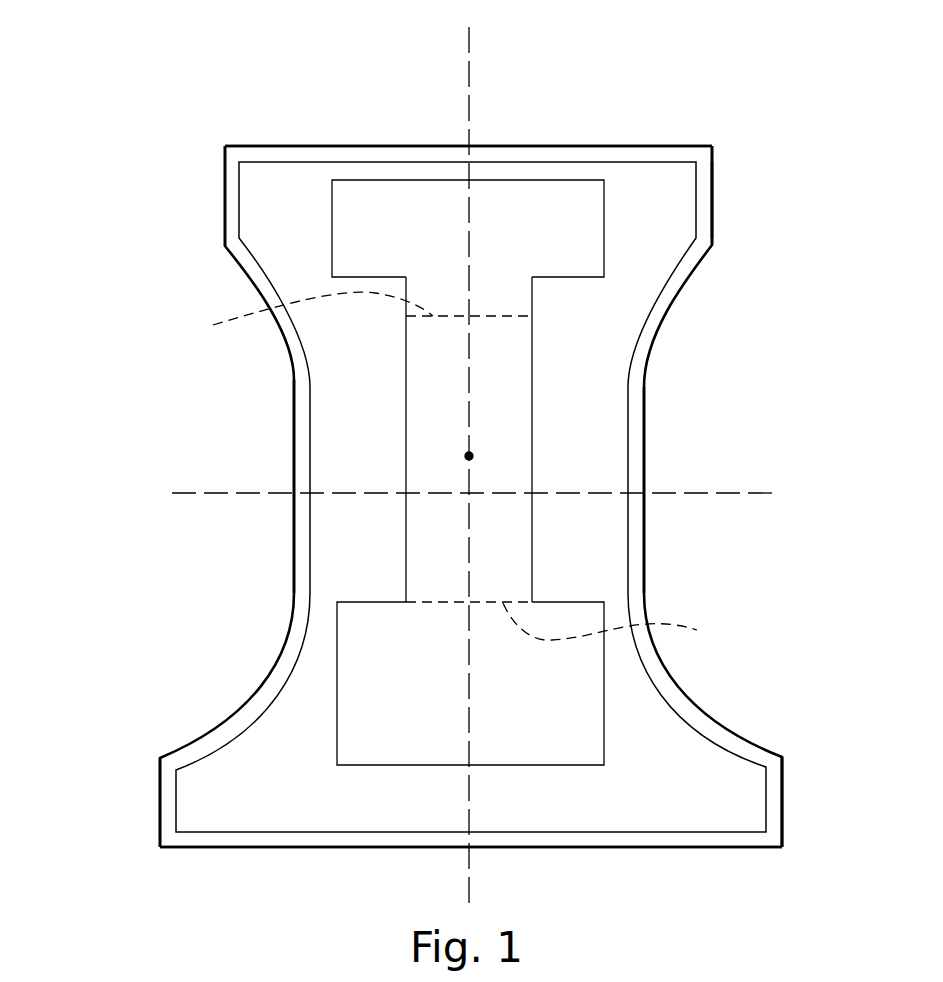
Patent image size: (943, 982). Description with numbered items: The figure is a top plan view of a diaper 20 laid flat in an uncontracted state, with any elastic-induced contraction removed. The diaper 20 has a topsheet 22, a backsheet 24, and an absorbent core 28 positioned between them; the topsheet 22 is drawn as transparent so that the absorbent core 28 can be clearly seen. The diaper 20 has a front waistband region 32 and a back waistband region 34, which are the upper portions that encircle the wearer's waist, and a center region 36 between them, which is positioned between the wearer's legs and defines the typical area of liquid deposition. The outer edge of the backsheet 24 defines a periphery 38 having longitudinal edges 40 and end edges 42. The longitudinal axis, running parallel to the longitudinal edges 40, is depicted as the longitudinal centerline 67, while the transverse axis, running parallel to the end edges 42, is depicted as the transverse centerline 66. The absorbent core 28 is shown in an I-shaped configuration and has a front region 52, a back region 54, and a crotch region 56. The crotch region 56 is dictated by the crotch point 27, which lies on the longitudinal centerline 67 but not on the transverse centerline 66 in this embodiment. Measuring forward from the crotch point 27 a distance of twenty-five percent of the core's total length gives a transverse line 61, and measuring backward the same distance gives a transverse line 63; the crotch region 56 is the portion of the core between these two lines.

The diaper 20 is at (462, 468).
The topsheet 22 is at (680, 183).
The backsheet 24 is at (703, 221).
The crotch point 27 is at (469, 456).
The absorbent core 28 is at (565, 332).
The front waistband region 32 is at (201, 223).
The back waistband region 34 is at (140, 817).
The center region 36 is at (271, 444).
The periphery 38 is at (783, 796).
The longitudinal edges 40 is at (644, 452).
The end edges 42 is at (690, 143).
The front region 52 is at (385, 193).
The back region 54 is at (362, 675).
The crotch region 56 is at (500, 405).
The transverse line 61 is at (305, 316).
The transverse line 63 is at (617, 626).
The transverse centerline 66 is at (700, 493).
The longitudinal centerline 67 is at (468, 55).